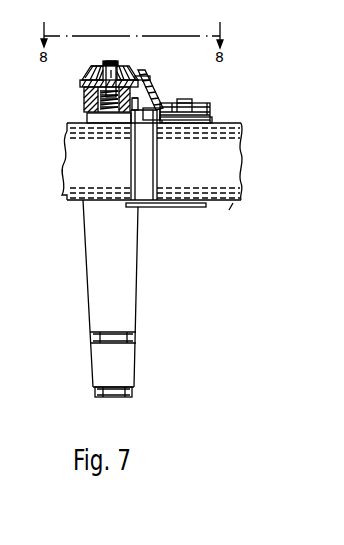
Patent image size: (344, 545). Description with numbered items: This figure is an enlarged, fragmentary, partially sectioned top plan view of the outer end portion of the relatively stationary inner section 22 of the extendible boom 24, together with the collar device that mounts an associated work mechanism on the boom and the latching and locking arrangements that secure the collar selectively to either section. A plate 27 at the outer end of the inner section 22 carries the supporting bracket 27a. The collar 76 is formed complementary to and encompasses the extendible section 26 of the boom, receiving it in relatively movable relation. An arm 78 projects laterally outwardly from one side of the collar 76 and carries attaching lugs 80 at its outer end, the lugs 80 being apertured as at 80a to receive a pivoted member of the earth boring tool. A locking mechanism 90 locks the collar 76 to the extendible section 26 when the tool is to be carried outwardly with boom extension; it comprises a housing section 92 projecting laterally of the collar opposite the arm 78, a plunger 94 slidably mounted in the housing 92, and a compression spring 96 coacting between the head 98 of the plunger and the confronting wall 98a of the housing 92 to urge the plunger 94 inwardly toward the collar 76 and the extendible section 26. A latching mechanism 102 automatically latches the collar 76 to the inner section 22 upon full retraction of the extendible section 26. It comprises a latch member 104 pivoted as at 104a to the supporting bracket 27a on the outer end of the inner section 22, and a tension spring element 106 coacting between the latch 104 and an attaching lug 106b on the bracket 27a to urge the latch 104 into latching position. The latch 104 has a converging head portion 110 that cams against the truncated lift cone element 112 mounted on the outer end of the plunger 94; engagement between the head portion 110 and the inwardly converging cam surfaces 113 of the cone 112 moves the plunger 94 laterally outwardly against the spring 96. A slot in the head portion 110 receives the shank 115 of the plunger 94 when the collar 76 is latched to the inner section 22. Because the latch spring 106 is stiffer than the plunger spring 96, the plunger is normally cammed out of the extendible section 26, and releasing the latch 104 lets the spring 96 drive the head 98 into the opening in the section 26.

The relatively stationary inner section of the boom 22 is at (233, 143).
The boom 24 is at (232, 208).
The extendible section of the boom 26 is at (66, 195).
The plate 27 is at (179, 208).
The supporting bracket 27a is at (211, 121).
The collar 76 is at (70, 177).
The arm 78 is at (89, 272).
The attaching lugs 80 is at (138, 338).
The apertures 80a is at (118, 334).
The locking mechanism 90 is at (143, 90).
The housing section 92 is at (88, 121).
The plunger 94 is at (111, 76).
The compression spring 96 is at (86, 93).
The head of the plunger 98 is at (96, 107).
The confronting wall of housing 98a is at (92, 74).
The latching mechanism 102 is at (188, 103).
The latch member 104 is at (163, 98).
The pivot 104a is at (206, 106).
The tension spring element 106 is at (146, 111).
The attaching lug 106b is at (135, 111).
The head portion of the latch 110 is at (82, 84).
The truncated lift cone element 112 is at (97, 65).
The inwardly converging cam surfaces 113 is at (137, 77).
The shank of the plunger 115 is at (128, 68).